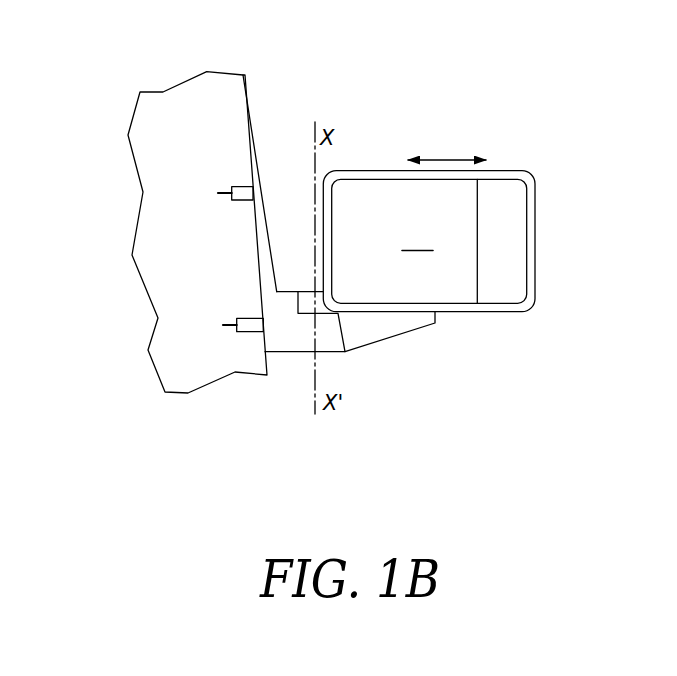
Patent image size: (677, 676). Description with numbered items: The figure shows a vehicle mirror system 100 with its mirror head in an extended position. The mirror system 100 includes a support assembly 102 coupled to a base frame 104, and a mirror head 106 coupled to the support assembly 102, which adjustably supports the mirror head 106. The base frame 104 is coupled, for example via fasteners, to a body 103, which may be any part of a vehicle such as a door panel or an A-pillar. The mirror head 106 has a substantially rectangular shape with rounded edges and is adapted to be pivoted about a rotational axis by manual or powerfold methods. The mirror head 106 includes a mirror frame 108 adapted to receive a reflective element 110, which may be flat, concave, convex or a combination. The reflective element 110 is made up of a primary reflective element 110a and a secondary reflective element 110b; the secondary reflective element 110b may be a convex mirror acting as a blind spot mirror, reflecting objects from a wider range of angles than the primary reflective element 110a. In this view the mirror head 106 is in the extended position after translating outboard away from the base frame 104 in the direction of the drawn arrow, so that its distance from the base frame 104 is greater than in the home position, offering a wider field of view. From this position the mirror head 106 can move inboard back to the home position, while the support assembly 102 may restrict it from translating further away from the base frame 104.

The mirror system 100 is at (470, 62).
The support assembly 102 is at (371, 360).
The body 103 is at (152, 232).
The base frame 104 is at (287, 334).
The mirror head 106 is at (534, 168).
The mirror frame 108 is at (528, 301).
The reflective element 110 is at (383, 211).
The primary reflective element 110a is at (410, 290).
The secondary reflective element 110b is at (495, 234).